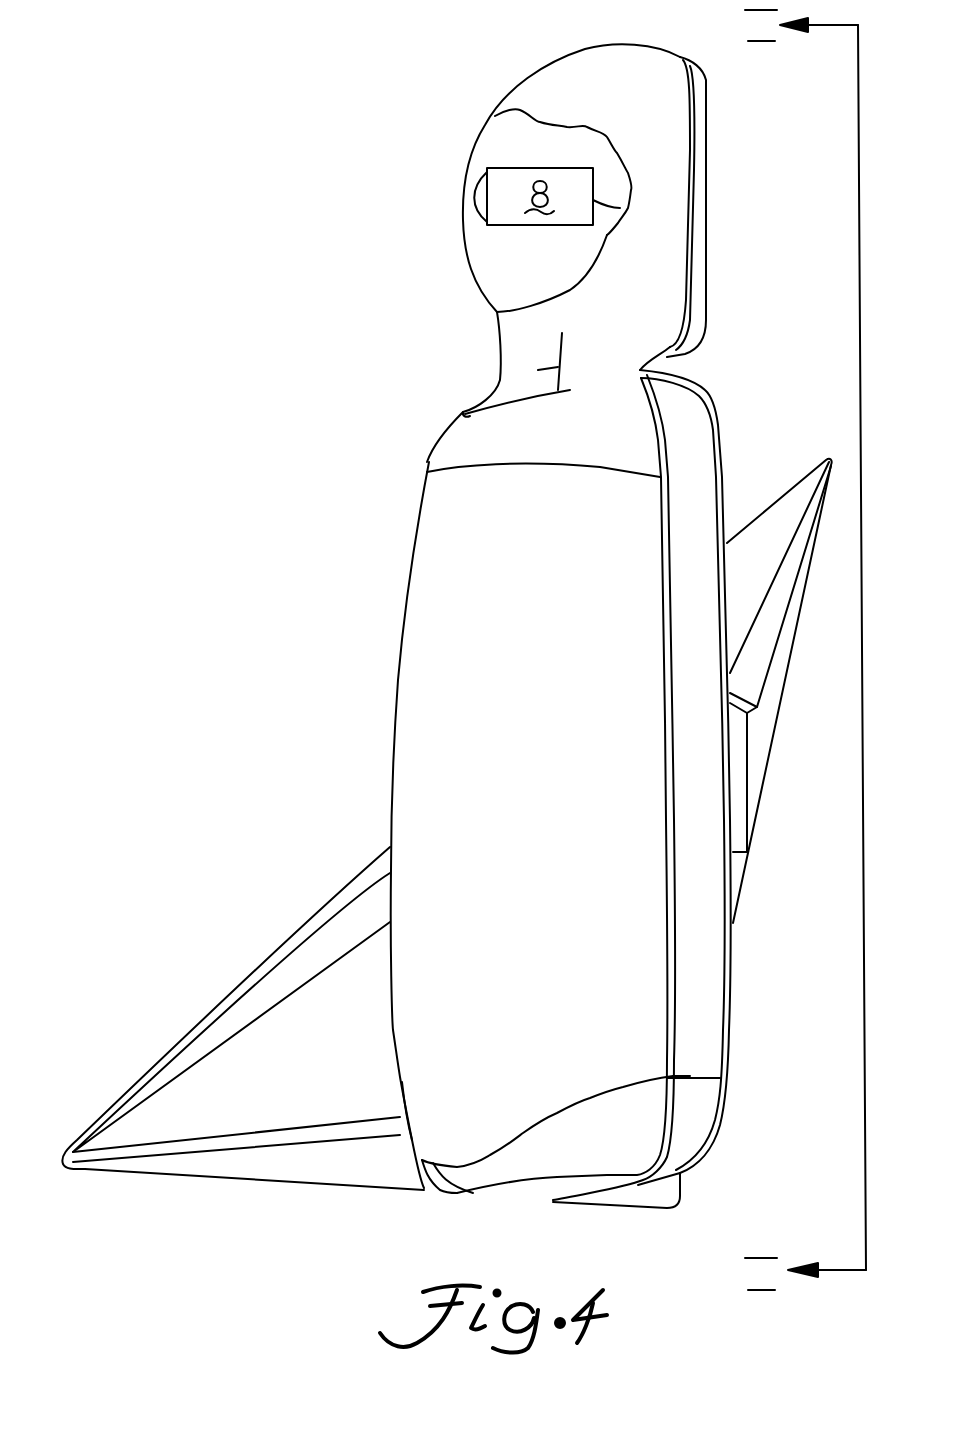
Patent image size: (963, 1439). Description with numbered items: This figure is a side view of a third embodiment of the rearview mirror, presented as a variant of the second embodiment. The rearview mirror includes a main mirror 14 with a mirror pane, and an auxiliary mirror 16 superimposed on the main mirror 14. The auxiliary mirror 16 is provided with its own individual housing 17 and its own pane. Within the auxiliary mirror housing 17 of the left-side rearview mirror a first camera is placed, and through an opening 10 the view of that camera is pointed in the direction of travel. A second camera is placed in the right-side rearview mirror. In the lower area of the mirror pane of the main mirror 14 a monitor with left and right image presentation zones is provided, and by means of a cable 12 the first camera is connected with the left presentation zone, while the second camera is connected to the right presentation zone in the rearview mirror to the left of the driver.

The opening 10 is at (464, 650).
The cable 12 is at (617, 170).
The main mirror 14 is at (426, 680).
The auxiliary mirror 16 is at (663, 68).
The auxiliary mirror housing 17 is at (605, 67).